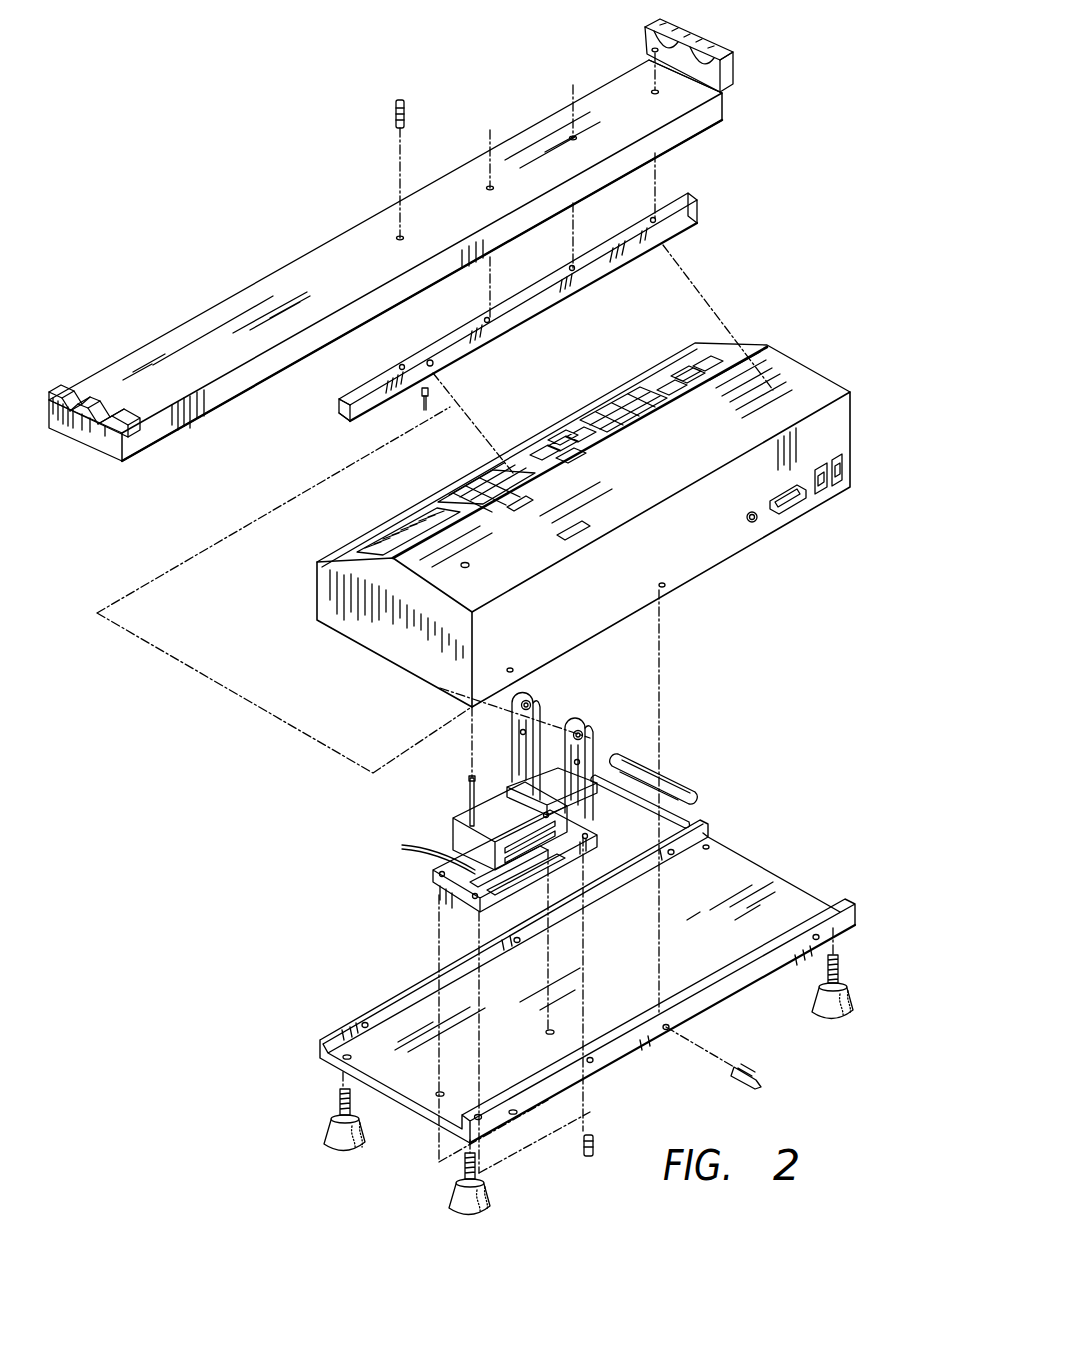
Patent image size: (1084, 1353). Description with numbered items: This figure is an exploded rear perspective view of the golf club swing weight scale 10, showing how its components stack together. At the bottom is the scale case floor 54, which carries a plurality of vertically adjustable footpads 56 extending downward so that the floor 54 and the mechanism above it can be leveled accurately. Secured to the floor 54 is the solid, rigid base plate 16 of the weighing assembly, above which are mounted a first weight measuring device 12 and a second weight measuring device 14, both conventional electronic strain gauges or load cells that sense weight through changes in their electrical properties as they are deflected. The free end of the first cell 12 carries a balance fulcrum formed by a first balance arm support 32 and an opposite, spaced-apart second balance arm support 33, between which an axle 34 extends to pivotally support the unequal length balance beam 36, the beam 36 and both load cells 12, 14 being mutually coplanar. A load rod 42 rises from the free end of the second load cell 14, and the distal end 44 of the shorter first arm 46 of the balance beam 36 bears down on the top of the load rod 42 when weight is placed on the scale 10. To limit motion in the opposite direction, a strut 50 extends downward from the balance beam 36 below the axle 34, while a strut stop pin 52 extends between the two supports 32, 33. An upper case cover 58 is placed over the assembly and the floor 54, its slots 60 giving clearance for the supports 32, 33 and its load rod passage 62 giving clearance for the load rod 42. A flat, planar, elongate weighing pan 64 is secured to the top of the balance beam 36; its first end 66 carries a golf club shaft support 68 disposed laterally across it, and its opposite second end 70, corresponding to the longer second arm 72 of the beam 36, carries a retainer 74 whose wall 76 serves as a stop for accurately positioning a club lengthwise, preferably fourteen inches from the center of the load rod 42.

The golf club swing weight scale 10 is at (818, 1092).
The first weight measuring device 12 is at (455, 850).
The second weight measuring device 14 is at (505, 768).
The base plate 16 is at (452, 900).
The first balance arm support 32 is at (594, 735).
The second balance arm support 33 is at (546, 698).
The axle 34 is at (671, 783).
The balance beam 36 is at (534, 312).
The load rod 42 is at (468, 782).
The distal end 44 is at (340, 418).
The first arm 46 is at (394, 370).
The strut 50 is at (421, 405).
The strut stop pin 52 is at (653, 810).
The scale case floor 54 is at (641, 977).
The footpads 56 is at (403, 1189).
The upper case cover 58 is at (392, 665).
The slots 60 is at (542, 493).
The load rod passage 62 is at (470, 565).
The weighing pan 64 is at (385, 288).
The first end 66 is at (114, 462).
The golf club shaft support 68 is at (62, 387).
The second end 70 is at (707, 128).
The second arm 72 is at (646, 222).
The retainer 74 is at (643, 30).
The wall 76 is at (725, 77).